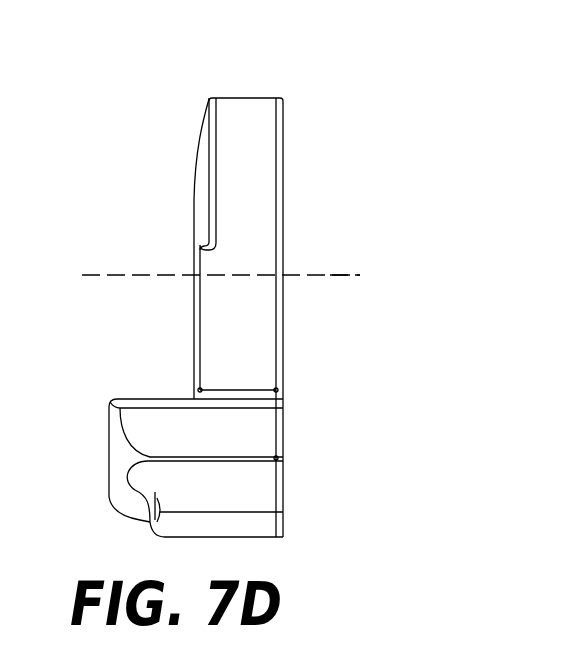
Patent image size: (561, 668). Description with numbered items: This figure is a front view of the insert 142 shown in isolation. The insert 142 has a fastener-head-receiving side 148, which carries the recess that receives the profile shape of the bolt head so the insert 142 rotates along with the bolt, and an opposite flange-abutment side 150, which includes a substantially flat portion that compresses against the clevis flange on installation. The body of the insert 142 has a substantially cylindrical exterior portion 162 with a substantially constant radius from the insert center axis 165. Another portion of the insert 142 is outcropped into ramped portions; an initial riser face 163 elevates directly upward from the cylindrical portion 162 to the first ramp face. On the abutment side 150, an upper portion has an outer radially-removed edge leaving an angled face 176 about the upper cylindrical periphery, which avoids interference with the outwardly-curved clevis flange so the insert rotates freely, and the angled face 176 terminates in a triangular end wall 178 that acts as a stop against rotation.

The insert 142 is at (366, 295).
The fastener-head-receiving side 148 is at (283, 362).
The flange-abutment side 150 is at (196, 352).
The substantially cylindrical exterior portion 162 is at (249, 98).
The initial riser face 163 is at (167, 277).
The insert center axis 165 is at (332, 274).
The angled face 176 is at (206, 168).
The triangular end wall 178 is at (193, 245).